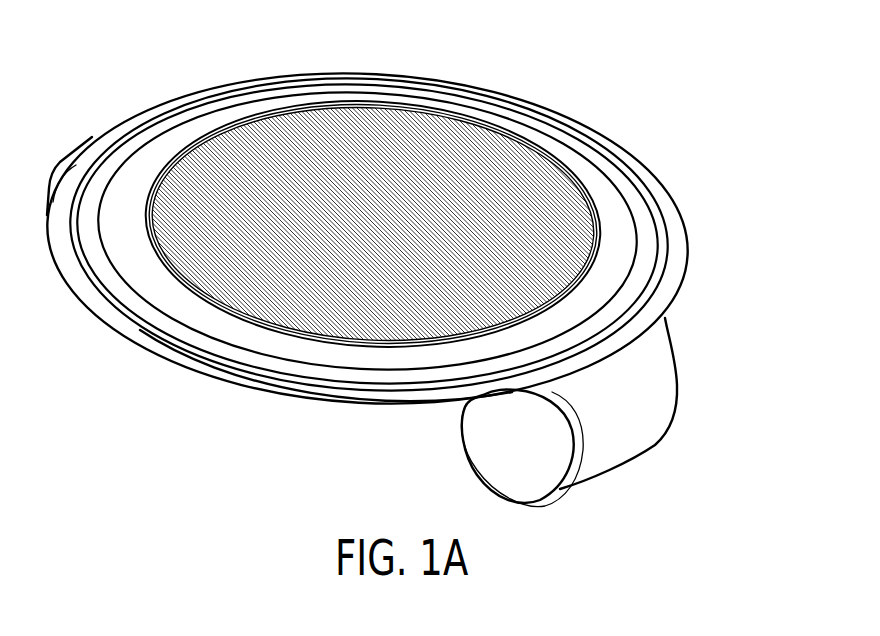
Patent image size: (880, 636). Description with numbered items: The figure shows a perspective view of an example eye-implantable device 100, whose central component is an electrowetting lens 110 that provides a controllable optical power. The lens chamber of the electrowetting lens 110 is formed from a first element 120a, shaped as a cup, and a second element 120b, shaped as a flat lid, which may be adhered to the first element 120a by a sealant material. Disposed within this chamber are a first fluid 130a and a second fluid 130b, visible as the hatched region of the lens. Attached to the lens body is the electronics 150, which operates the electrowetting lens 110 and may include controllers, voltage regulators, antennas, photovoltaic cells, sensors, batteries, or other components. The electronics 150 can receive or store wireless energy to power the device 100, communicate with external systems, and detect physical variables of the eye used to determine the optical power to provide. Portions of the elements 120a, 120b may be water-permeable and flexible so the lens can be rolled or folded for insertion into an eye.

The eye-implantable device 100 is at (440, 260).
The electrowetting lens 110 is at (440, 207).
The first element 120a is at (592, 157).
The second element 120b is at (508, 123).
The first fluid 130a is at (323, 103).
The second fluid 130b is at (240, 132).
The electronics 150 is at (490, 452).